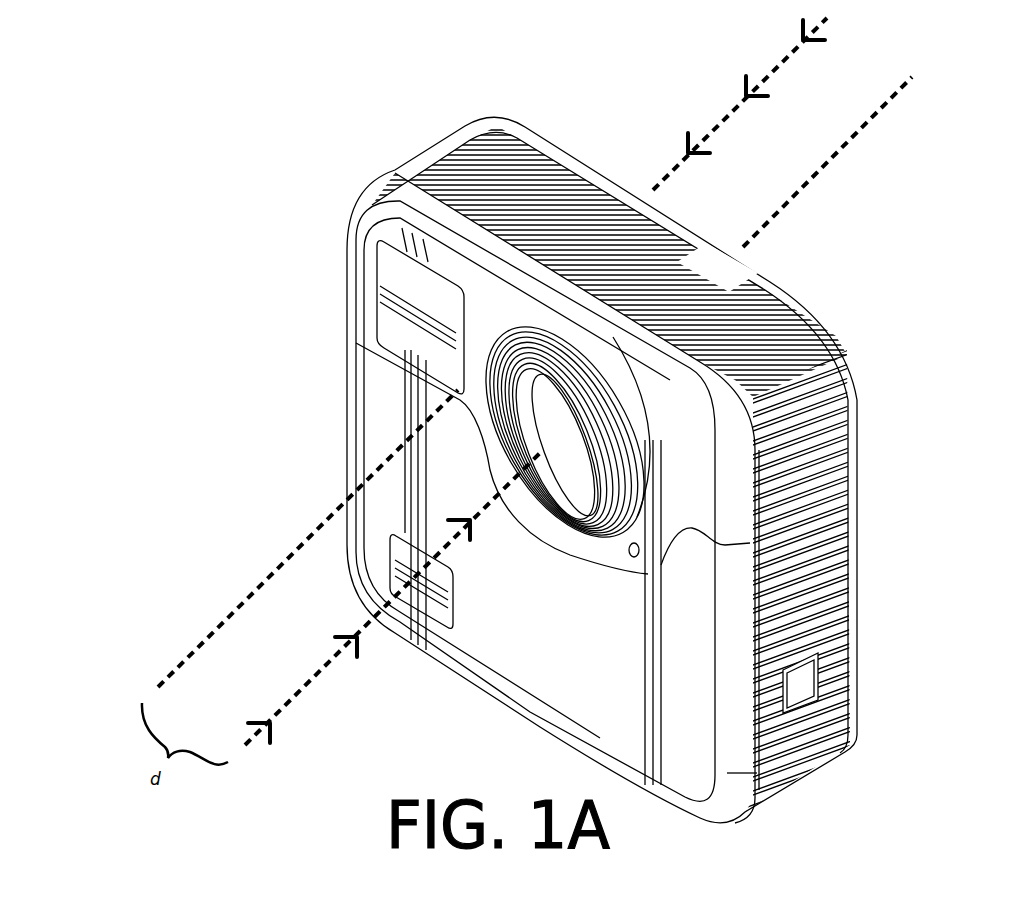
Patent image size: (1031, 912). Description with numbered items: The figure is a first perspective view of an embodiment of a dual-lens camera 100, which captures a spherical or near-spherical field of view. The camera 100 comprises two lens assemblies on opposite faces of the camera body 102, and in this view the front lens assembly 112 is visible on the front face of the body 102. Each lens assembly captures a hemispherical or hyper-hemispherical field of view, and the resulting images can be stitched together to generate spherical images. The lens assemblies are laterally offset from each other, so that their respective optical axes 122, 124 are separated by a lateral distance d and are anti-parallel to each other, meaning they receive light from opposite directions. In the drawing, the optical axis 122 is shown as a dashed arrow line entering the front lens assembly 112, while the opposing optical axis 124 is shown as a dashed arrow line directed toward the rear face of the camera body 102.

The dual-lens camera 100 is at (310, 187).
The camera body 102 is at (376, 437).
The lens assembly 112 is at (578, 446).
The optical axis 122 is at (300, 683).
The optical axis 124 is at (721, 124).